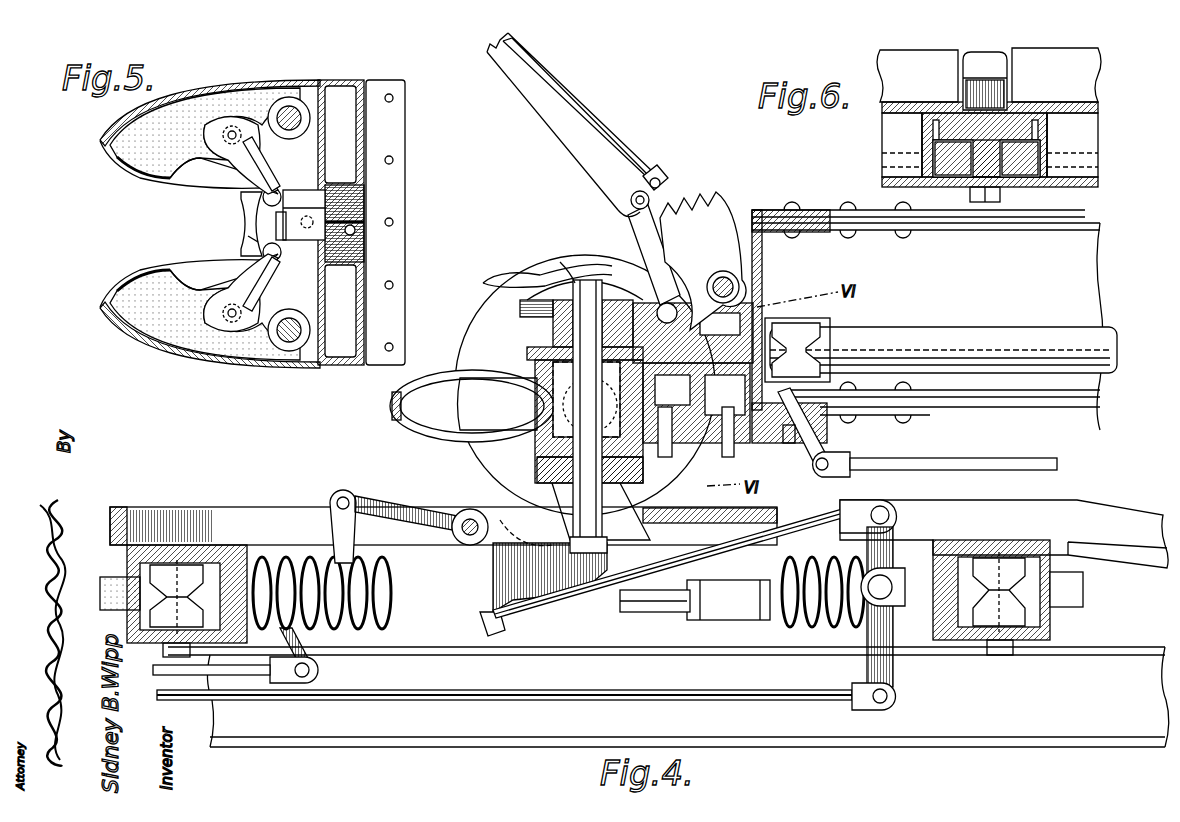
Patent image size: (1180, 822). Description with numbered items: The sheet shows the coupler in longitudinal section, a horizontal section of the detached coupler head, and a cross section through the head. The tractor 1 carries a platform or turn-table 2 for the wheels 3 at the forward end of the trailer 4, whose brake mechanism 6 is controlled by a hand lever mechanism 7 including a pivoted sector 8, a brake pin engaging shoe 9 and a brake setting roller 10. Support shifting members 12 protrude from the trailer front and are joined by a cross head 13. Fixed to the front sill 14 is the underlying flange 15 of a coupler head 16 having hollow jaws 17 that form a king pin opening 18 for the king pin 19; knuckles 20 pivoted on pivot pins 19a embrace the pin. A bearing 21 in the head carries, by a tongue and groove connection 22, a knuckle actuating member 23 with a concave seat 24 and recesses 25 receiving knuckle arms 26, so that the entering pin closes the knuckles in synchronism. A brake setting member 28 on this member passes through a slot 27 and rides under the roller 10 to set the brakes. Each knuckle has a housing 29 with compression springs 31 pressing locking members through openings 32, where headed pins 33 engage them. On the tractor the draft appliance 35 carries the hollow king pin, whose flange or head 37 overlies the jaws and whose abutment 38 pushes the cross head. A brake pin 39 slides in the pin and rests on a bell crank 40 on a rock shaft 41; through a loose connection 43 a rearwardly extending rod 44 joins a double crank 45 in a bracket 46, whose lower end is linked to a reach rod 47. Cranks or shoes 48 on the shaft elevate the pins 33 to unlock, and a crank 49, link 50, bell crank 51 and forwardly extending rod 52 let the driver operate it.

In FIG. 4, the tractor 1 is at (668, 697).
In FIG. 4, the platform or turn-table 2 is at (120, 507).
In FIG. 4, the wheels 3 is at (483, 330).
In FIG. 4, the trailer 4 is at (1088, 257).
In FIG. 4, the brake mechanism 6 is at (973, 463).
In FIG. 4, the hand lever mechanism 7 is at (567, 137).
In FIG. 4, the pivoted sector 8 is at (704, 204).
In FIG. 4, the brake pin engaging shoe 9 is at (520, 277).
In FIG. 4, the brake setting roller 10 is at (630, 275).
In FIG. 4, the support shifting members 12 is at (970, 333).
In FIG. 4, the cross head 13 is at (573, 275).
In FIG. 4, the front sill 14 is at (766, 253).
In FIG. 5, the underlying flange 15 is at (390, 83).
In FIG. 4, the underlying flange 15 is at (800, 436).
In FIG. 5, the coupler head 16 is at (340, 84).
In FIG. 6, the coupler head 16 is at (1052, 104).
In FIG. 4, the coupler head 16 is at (735, 455).
In FIG. 5, the jaws 17 is at (205, 84).
In FIG. 4, the jaws 17 is at (405, 432).
In FIG. 5, the king pin opening 18 is at (231, 224).
In FIG. 4, the king pin 19 is at (537, 458).
In FIG. 5, the pivot pins 19a is at (291, 110).
In FIG. 4, the pivot pins 19a is at (680, 442).
In FIG. 5, the knuckles 20 is at (172, 170).
In FIG. 4, the knuckles 20 is at (498, 404).
In FIG. 5, the bearing 21 is at (350, 197).
In FIG. 6, the bearing 21 is at (1030, 145).
In FIG. 4, the bearing 21 is at (786, 443).
In FIG. 6, the tongue and groove connection 22 is at (973, 152).
In FIG. 5, the knuckle actuating member 23 is at (272, 223).
In FIG. 6, the knuckle actuating member 23 is at (950, 128).
In FIG. 4, the knuckle actuating member 23 is at (790, 393).
In FIG. 5, the concave seat 24 is at (247, 240).
In FIG. 5, the recesses 25 is at (260, 200).
In FIG. 5, the knuckle arms 26 is at (283, 190).
In FIG. 6, the slot 27 is at (945, 110).
In FIG. 4, the slot 27 is at (785, 335).
In FIG. 5, the brake setting member 28 is at (304, 215).
In FIG. 6, the brake setting member 28 is at (988, 60).
In FIG. 5, the housing 29 is at (240, 120).
In FIG. 4, the compression springs 31 is at (540, 412).
In FIG. 5, the openings 32 is at (225, 180).
In FIG. 4, the headed pins 33 is at (545, 500).
In FIG. 4, the draft appliance 35 is at (690, 608).
In FIG. 4, the peripheral flange or head 37 is at (527, 352).
In FIG. 4, the abutment 38 is at (553, 316).
In FIG. 4, the brake pin 39 is at (632, 512).
In FIG. 4, the bell crank 40 is at (553, 600).
In FIG. 4, the rock shaft 41 is at (462, 512).
In FIG. 4, the loose connection 43 is at (492, 633).
In FIG. 4, the rearwardly extending rod 44 is at (868, 510).
In FIG. 4, the double crank 45 is at (892, 530).
In FIG. 4, the bracket 46 is at (902, 603).
In FIG. 4, the reach rod 47 is at (753, 690).
In FIG. 4, the cranks or shoes 48 is at (575, 530).
In FIG. 4, the crank 49 is at (393, 500).
In FIG. 4, the link 50 is at (334, 535).
In FIG. 4, the bell crank 51 is at (308, 642).
In FIG. 4, the forwardly extending rod 52 is at (238, 677).